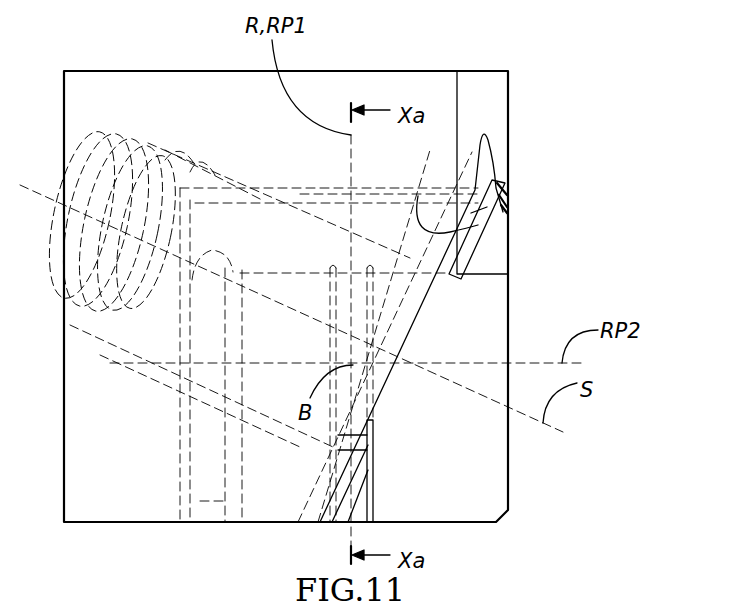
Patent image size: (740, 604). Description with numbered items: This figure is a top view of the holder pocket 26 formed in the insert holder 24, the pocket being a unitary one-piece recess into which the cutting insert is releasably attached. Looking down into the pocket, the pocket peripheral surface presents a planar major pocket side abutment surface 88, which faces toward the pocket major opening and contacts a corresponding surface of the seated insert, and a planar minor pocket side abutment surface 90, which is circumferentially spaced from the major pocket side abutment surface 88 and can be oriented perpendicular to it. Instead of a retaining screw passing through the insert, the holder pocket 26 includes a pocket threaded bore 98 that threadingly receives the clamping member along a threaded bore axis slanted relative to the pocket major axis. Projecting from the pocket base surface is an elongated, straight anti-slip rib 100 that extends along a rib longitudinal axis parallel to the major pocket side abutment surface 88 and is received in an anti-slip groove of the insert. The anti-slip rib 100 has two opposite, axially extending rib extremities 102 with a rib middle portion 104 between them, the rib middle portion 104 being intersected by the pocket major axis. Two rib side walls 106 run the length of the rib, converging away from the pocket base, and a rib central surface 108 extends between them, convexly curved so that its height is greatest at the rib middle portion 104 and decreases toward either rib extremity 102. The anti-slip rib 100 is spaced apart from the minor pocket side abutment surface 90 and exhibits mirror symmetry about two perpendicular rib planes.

The insert holder 24 is at (526, 78).
The holder pocket 26 is at (466, 470).
The major pocket side abutment surface 88 is at (199, 442).
The minor pocket side abutment surface 90 is at (470, 212).
The pocket threaded bore 98 is at (100, 158).
The anti-slip rib 100 is at (382, 328).
The rib extremities 102 is at (348, 308).
The rib middle portion 104 is at (358, 373).
The rib side walls 106 is at (333, 350).
The rib central surface 108 is at (423, 214).